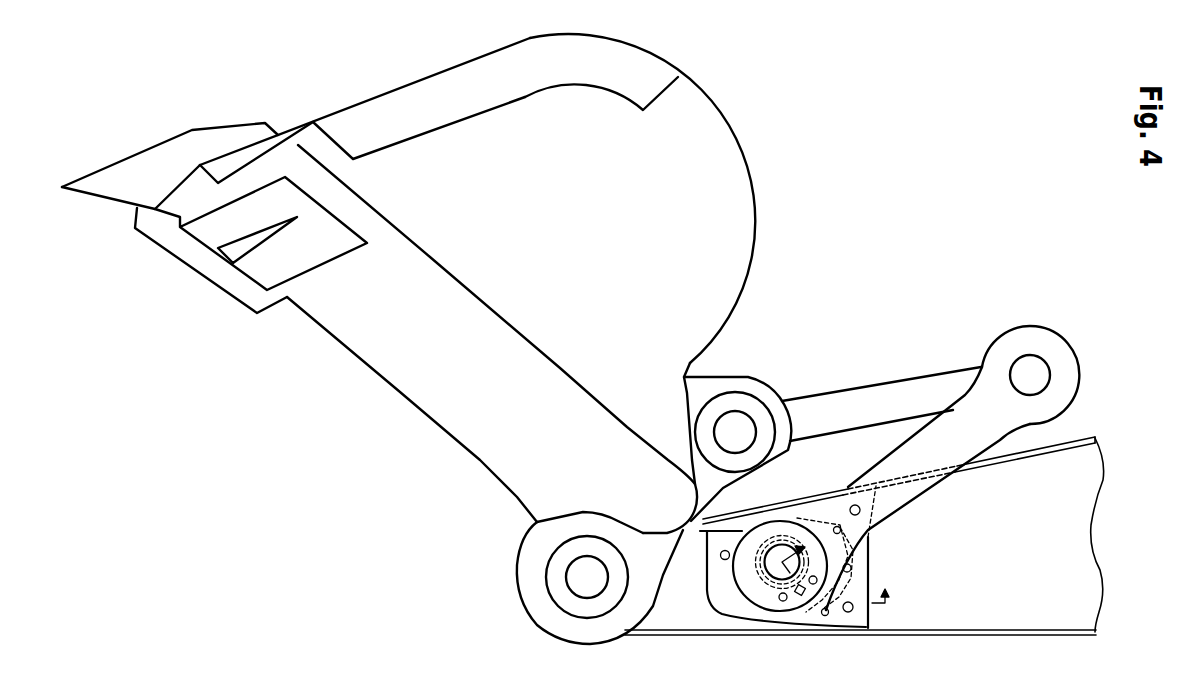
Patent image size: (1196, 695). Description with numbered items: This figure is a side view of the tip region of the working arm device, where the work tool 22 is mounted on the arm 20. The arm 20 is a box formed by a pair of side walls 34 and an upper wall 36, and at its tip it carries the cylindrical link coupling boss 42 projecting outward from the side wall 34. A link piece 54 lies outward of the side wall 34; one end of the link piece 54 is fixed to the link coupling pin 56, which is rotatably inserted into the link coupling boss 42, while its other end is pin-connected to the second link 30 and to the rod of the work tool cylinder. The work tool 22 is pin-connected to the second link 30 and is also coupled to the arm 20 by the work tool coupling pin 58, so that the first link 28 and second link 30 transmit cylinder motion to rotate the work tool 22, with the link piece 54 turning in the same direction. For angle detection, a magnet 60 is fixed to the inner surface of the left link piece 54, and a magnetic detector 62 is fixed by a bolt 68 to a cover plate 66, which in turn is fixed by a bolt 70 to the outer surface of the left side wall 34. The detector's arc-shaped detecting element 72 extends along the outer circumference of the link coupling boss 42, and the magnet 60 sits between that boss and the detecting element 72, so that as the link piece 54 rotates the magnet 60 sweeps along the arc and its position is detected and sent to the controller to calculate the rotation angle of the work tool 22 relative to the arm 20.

The arm 20 is at (1077, 435).
The work tool 22 is at (710, 133).
The first link 28 is at (900, 446).
The second link 30 is at (890, 388).
The side wall 34 is at (1090, 572).
The upper wall 36 is at (1045, 443).
The link coupling boss 42 is at (762, 585).
The link piece 54 is at (828, 512).
The link coupling pin 56 is at (700, 530).
The work tool coupling pin 58 is at (575, 588).
The magnet 60 is at (801, 596).
The magnetic detector 62 is at (825, 616).
The cover plate 66 is at (873, 531).
The bolt 68 is at (840, 533).
The bolt 70 is at (721, 558).
The arc-shaped detecting element 72 is at (784, 601).